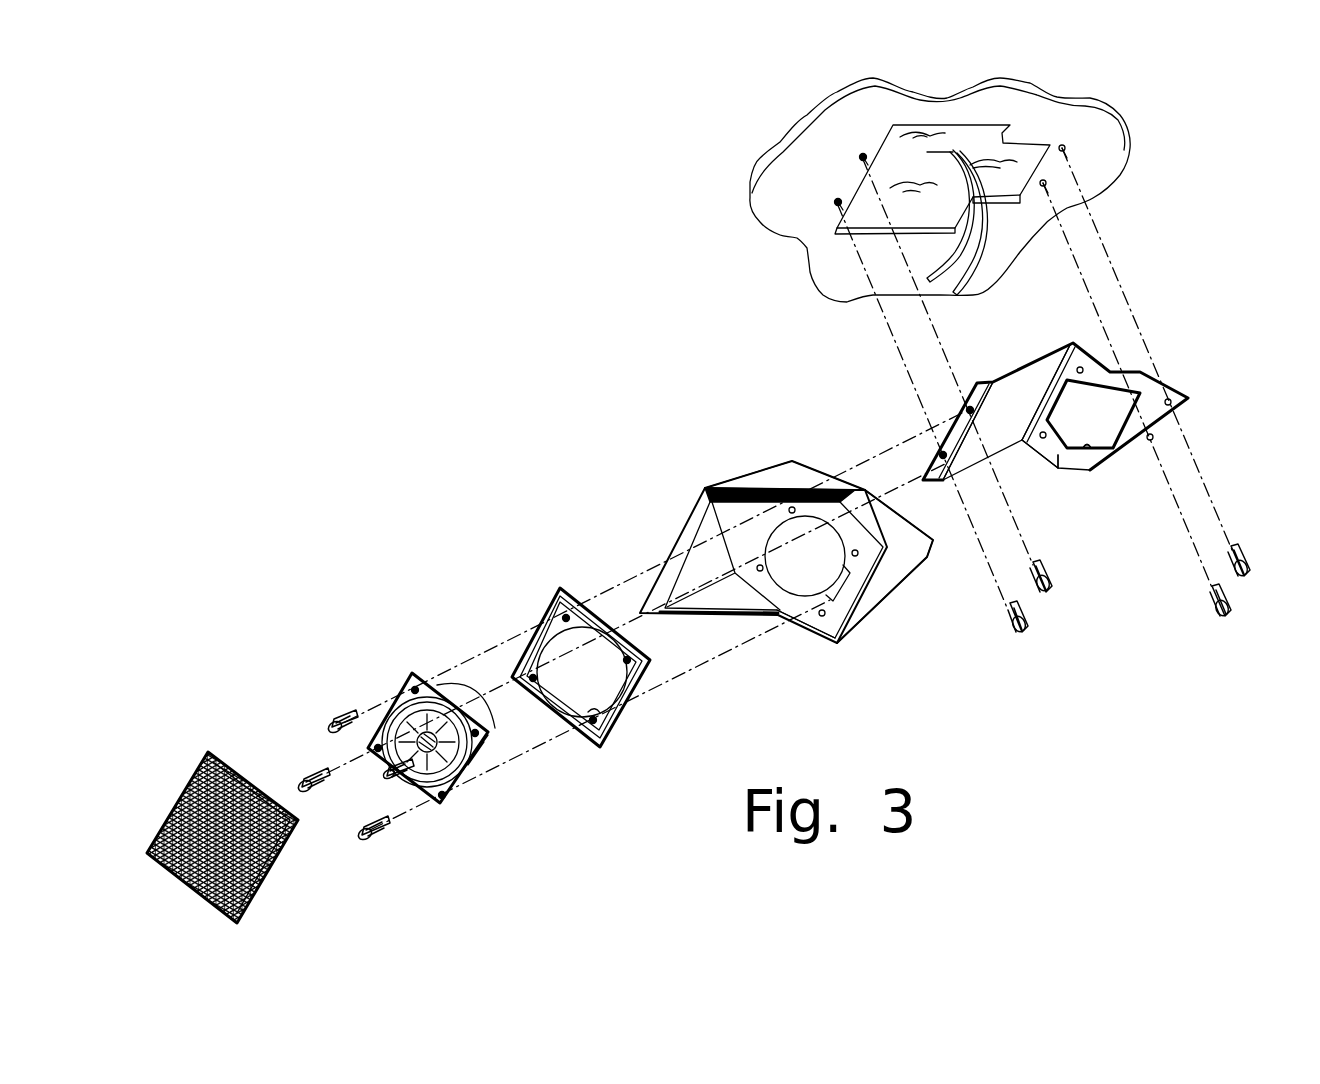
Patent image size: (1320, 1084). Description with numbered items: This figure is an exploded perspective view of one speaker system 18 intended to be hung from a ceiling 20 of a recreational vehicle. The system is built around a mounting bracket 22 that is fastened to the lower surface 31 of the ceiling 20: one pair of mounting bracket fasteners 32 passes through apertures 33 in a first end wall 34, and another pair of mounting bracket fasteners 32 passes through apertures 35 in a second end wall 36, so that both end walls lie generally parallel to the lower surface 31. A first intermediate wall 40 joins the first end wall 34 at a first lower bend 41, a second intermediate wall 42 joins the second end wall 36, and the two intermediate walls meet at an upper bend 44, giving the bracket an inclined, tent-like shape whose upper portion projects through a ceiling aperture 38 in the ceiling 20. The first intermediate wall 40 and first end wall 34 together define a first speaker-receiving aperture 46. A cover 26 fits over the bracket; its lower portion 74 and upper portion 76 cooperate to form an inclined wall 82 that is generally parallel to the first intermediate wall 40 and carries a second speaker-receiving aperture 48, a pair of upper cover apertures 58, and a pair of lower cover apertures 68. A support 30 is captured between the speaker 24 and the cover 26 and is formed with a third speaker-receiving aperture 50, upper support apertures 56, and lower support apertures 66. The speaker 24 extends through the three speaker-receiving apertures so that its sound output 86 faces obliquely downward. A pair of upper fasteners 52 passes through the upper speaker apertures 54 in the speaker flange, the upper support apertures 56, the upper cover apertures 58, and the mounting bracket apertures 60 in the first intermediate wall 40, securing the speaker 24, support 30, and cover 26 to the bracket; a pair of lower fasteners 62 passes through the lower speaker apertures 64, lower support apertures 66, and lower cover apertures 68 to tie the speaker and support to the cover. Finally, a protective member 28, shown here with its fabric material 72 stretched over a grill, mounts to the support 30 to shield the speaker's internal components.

The speaker system 18 is at (372, 418).
The ceiling 20 is at (975, 190).
The mounting bracket 22 is at (1067, 391).
The speaker 24 is at (446, 716).
The cover 26 is at (796, 555).
The protective member 28 is at (205, 786).
The support 30 is at (578, 641).
The lower surface 31 is at (1105, 185).
The mounting bracket fasteners 32 is at (1050, 590).
The apertures 33 is at (1172, 402).
The first end wall 34 is at (1182, 425).
The apertures 35 is at (955, 432).
The second end wall 36 is at (982, 380).
The ceiling aperture 38 is at (985, 195).
The first intermediate wall 40 is at (1052, 470).
The first lower bend 41 is at (1075, 445).
The second intermediate wall 42 is at (1015, 378).
The upper bend 44 is at (1062, 350).
The first speaker-receiving aperture 46 is at (1086, 457).
The second speaker-receiving aperture 48 is at (822, 617).
The third speaker-receiving aperture 50 is at (578, 735).
The upper fasteners 52 is at (308, 775).
The upper speaker apertures 54 is at (385, 708).
The upper support apertures 56 is at (562, 618).
The upper cover apertures 58 is at (760, 563).
The mounting bracket apertures 60 is at (1083, 370).
The lower fasteners 62 is at (375, 820).
The lower speaker apertures 64 is at (482, 770).
The lower support apertures 66 is at (628, 700).
The lower cover apertures 68 is at (860, 612).
The fabric material 72 is at (178, 787).
The lower portion 74 is at (897, 577).
The upper portion 76 is at (795, 470).
The wall 82 is at (790, 615).
The sound output 86 is at (438, 803).